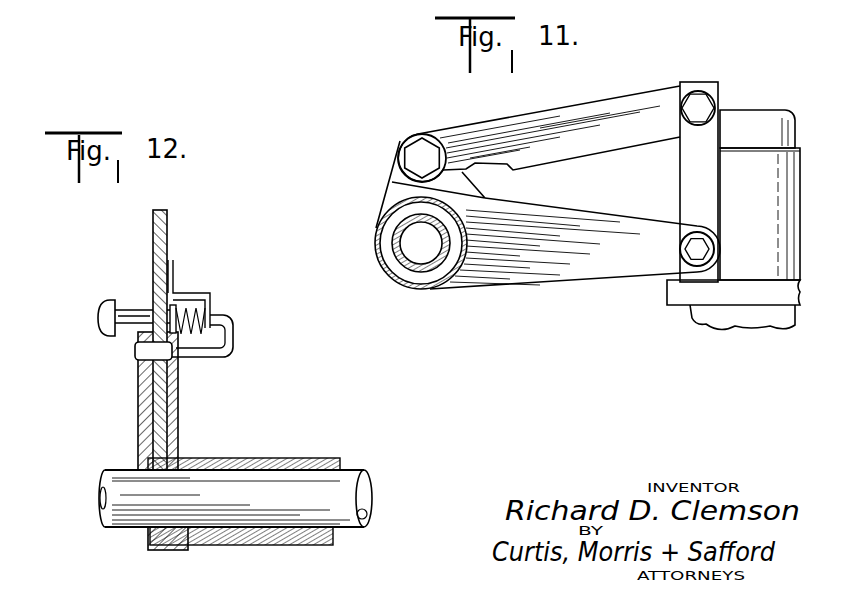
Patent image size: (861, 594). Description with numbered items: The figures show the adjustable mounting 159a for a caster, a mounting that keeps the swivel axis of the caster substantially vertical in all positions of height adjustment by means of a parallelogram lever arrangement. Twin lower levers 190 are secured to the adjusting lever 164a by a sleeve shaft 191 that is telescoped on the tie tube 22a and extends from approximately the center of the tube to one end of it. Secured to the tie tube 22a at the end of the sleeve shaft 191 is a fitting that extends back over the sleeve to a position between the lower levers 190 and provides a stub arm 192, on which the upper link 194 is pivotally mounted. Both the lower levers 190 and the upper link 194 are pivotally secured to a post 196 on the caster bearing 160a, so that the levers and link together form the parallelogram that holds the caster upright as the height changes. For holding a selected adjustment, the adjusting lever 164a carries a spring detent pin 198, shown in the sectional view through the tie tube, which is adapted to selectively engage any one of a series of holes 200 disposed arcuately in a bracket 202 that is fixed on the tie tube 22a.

In FIG. 11, the tie tube 22a is at (397, 262).
In FIG. 12, the tie tube 22a is at (355, 486).
In FIG. 11, the adjustable mounting 159a is at (763, 88).
In FIG. 11, the caster bearing 160a is at (774, 203).
In FIG. 12, the adjusting lever 164a is at (160, 226).
In FIG. 11, the lower levers 190 is at (580, 261).
In FIG. 11, the sleeve shaft 191 is at (415, 288).
In FIG. 12, the sleeve shaft 191 is at (280, 458).
In FIG. 11, the stub arm 192 is at (395, 187).
In FIG. 11, the upper link 194 is at (548, 123).
In FIG. 11, the post 196 is at (683, 171).
In FIG. 12, the spring detent pin 198 is at (235, 343).
In FIG. 12, the holes 200 is at (138, 366).
In FIG. 12, the bracket 202 is at (147, 407).